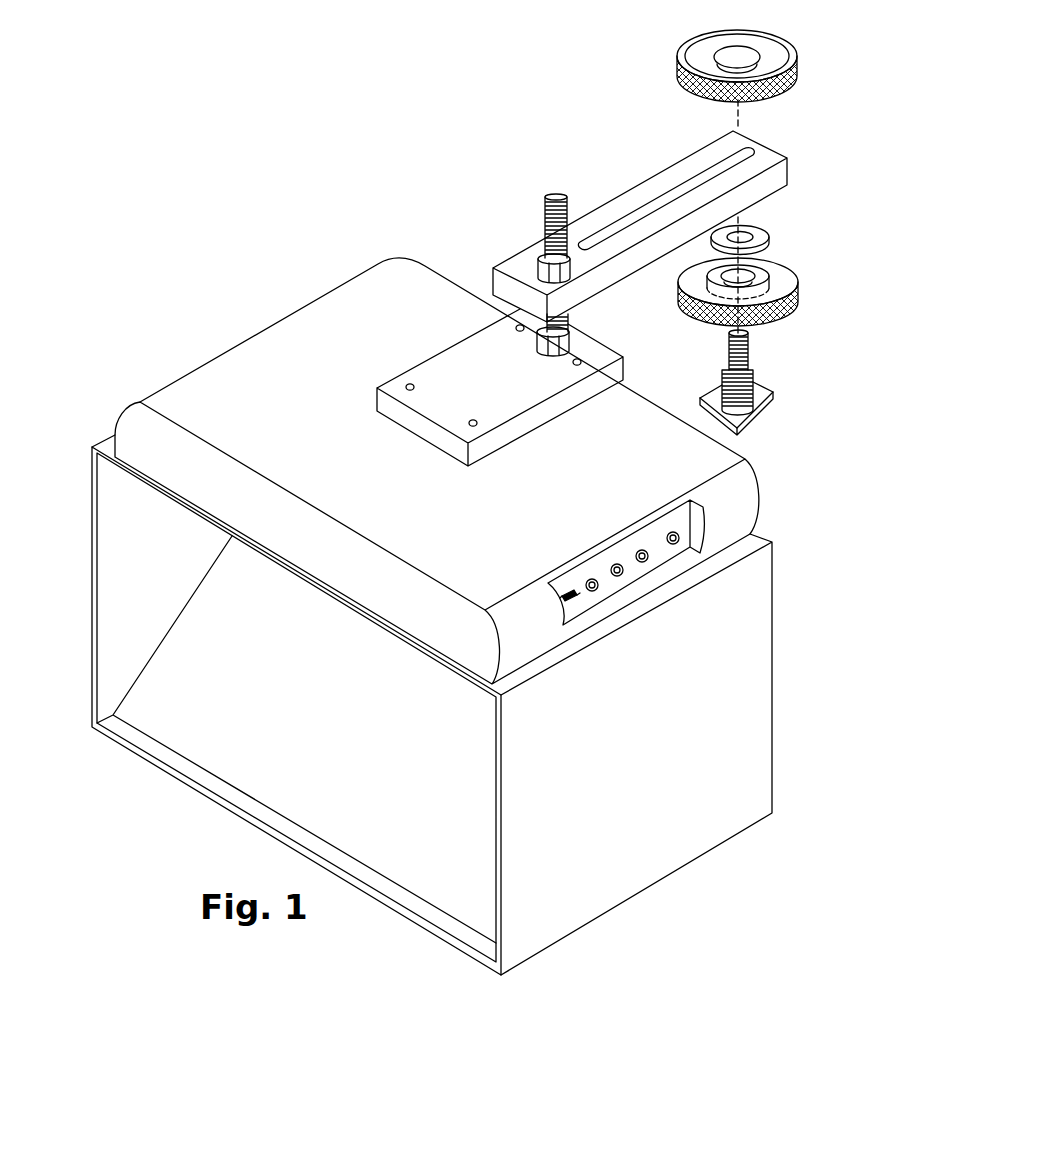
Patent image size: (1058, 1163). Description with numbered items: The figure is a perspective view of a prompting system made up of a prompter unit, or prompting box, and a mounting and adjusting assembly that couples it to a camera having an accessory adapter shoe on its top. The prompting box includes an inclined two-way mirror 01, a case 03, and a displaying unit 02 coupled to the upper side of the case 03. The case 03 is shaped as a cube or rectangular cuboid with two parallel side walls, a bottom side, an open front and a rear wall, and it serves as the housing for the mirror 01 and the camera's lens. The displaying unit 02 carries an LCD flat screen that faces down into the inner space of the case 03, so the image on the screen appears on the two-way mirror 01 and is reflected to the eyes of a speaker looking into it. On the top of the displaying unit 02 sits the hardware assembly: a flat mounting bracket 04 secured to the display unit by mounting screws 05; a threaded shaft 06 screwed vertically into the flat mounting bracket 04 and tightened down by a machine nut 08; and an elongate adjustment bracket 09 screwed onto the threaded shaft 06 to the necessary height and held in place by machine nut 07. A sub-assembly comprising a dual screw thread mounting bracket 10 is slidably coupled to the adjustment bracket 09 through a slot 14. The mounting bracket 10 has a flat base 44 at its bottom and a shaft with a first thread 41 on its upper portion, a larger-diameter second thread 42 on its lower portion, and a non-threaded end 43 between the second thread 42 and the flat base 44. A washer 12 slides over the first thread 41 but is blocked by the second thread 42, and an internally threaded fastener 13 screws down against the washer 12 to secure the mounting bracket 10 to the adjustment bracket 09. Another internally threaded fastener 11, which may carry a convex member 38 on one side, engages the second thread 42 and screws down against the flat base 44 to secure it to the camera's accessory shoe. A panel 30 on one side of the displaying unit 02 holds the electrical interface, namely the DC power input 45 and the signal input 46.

The inclined two-way mirror 01 is at (217, 739).
The displaying unit 02 is at (197, 405).
The case 03 is at (723, 735).
The flat mounting bracket 04 is at (476, 360).
The mounting screws 05 is at (411, 384).
The threaded shaft 06 is at (556, 197).
The machine nut 07 is at (543, 262).
The machine nut 08 is at (570, 337).
The elongate adjustment bracket 09 is at (763, 157).
The dual screw thread mounting bracket 10 is at (717, 370).
The internally threaded fastener 11 is at (782, 282).
The washer 12 is at (763, 235).
The internally threaded fastener 13 is at (770, 55).
The slot 14 is at (652, 207).
The panel 30 is at (657, 527).
The convex member 38 is at (762, 292).
The first thread 41 is at (748, 342).
The second thread 42 is at (752, 385).
The non-threaded end 43 is at (760, 408).
The flat base 44 is at (752, 417).
The DC power input 45 is at (640, 545).
The signal input 46 is at (566, 590).